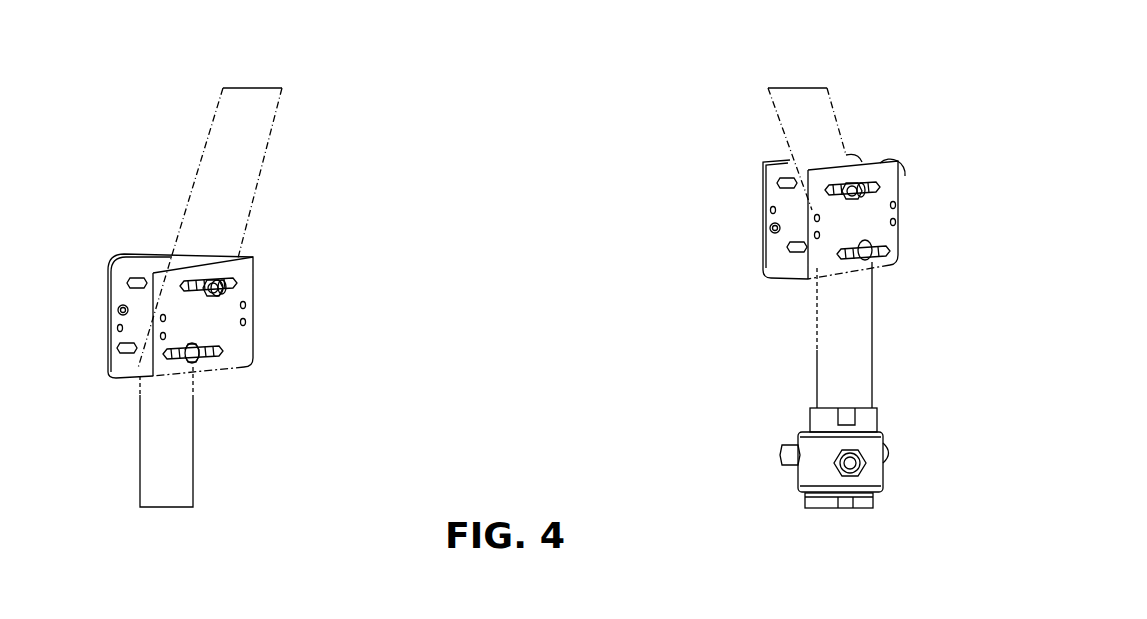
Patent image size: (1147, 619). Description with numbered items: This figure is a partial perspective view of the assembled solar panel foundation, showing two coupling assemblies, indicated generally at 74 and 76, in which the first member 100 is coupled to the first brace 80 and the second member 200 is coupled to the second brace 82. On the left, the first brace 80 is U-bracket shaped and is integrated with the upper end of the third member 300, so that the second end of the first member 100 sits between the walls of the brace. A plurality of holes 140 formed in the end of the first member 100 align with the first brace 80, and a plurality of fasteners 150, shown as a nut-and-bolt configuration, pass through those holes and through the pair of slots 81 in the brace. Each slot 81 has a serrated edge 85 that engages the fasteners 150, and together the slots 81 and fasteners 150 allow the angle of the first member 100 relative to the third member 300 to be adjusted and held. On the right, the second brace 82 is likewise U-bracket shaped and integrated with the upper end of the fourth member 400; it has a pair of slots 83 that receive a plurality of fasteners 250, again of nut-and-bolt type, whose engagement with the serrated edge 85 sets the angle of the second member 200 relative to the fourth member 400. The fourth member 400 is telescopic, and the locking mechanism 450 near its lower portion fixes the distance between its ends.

The first mounting assembly 74 is at (140, 250).
The second mounting assembly 76 is at (890, 300).
The first brace 80 is at (230, 362).
The pair of slots 81 is at (152, 280).
The second brace 82 is at (825, 262).
The pair of slots 83 is at (887, 247).
The serrated edge 85 is at (237, 288).
The first member 100 is at (185, 212).
The plurality of holes 140 is at (182, 360).
The plurality of fasteners 150 is at (212, 285).
The second member 200 is at (833, 128).
The plurality of fasteners 250 is at (865, 250).
The third member 300 is at (185, 462).
The fourth member 400 is at (828, 350).
The locking mechanism 450 is at (867, 473).